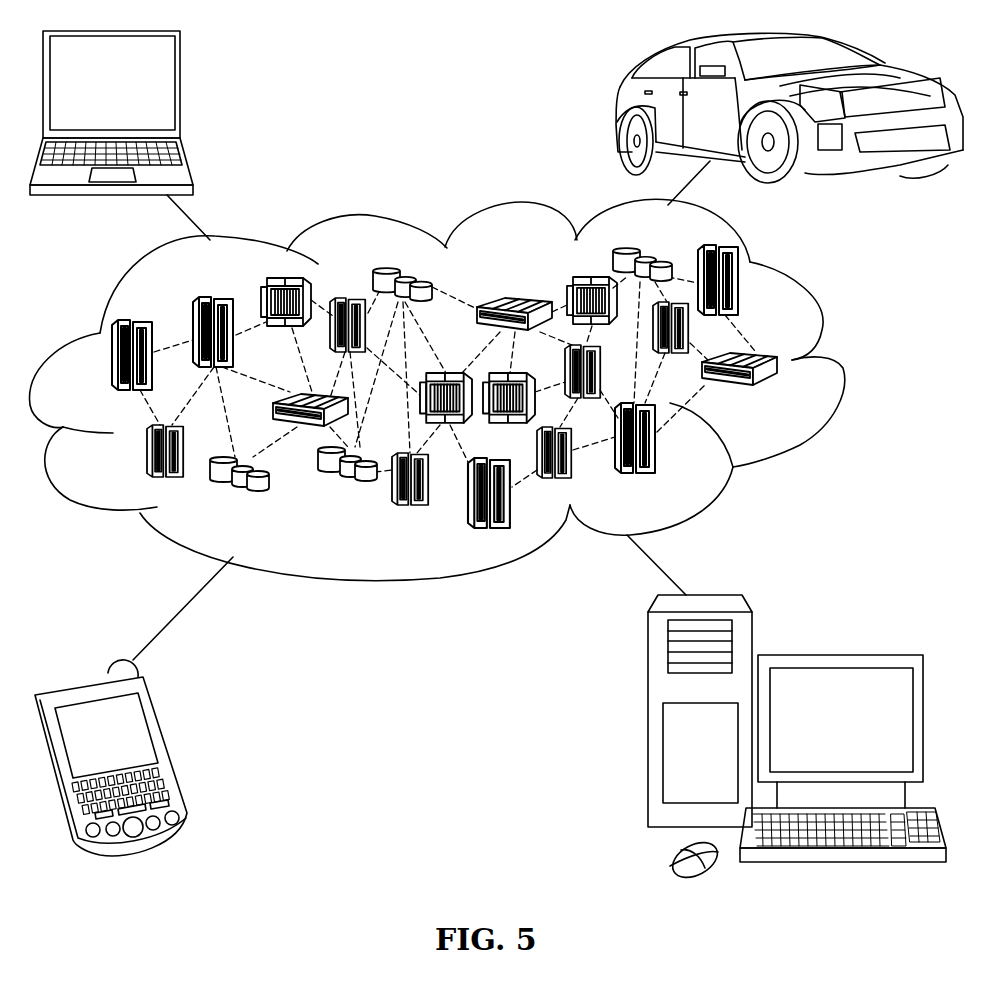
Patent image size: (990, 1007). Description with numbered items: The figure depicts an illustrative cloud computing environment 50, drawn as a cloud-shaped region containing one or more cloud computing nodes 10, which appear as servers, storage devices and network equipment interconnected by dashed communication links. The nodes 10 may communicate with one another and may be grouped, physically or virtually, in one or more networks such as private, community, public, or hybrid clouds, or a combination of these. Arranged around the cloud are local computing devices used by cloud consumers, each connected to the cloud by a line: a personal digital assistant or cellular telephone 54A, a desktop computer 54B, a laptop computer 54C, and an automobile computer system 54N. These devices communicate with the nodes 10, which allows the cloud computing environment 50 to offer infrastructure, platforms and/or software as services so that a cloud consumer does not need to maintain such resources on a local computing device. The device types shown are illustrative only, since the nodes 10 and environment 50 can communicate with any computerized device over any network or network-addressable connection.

The cloud computing environment 50 is at (843, 368).
The cloud computing node 10 is at (783, 397).
The personal digital assistant or cellular telephone 54A is at (172, 748).
The desktop computer 54B is at (838, 652).
The laptop computer 54C is at (180, 90).
The automobile computer system 54N is at (621, 109).